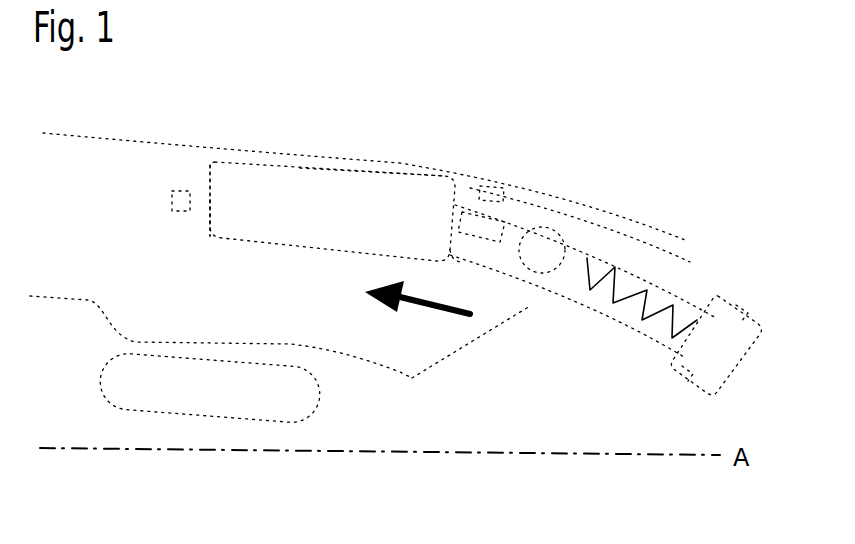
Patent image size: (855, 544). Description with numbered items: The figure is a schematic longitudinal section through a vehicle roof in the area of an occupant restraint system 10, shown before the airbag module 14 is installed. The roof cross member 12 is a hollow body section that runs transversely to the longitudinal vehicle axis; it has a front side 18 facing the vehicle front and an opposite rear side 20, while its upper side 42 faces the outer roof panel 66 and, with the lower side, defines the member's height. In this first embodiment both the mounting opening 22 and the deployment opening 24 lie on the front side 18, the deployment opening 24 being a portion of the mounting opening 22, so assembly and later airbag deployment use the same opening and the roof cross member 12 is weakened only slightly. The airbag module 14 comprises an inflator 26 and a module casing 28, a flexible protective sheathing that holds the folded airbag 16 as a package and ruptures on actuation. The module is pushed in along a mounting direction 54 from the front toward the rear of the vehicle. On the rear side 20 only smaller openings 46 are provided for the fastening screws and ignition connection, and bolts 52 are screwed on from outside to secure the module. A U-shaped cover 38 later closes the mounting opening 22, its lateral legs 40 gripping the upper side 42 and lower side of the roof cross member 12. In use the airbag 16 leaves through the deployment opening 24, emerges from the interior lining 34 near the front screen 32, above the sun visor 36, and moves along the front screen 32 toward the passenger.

The occupant restraint system 10 is at (532, 108).
The roof cross member 12 is at (416, 174).
The airbag module 14 is at (587, 324).
The airbag 16 is at (650, 290).
The front side 18 is at (453, 203).
The rear side 20 is at (209, 190).
The mounting opening 22 is at (452, 256).
The deployment opening 24 is at (750, 360).
The inflator 26 is at (567, 244).
The module casing 28 is at (613, 258).
The front screen 32 is at (567, 205).
The interior lining 34 is at (342, 352).
The sun visor 36 is at (178, 400).
The cover 38 is at (731, 290).
The lateral legs 40 is at (746, 315).
The upper side 42 is at (345, 172).
The smaller openings 46 is at (190, 226).
The bolts 52 is at (172, 202).
The mounting direction 54 is at (423, 305).
The outer roof panel 66 is at (245, 143).